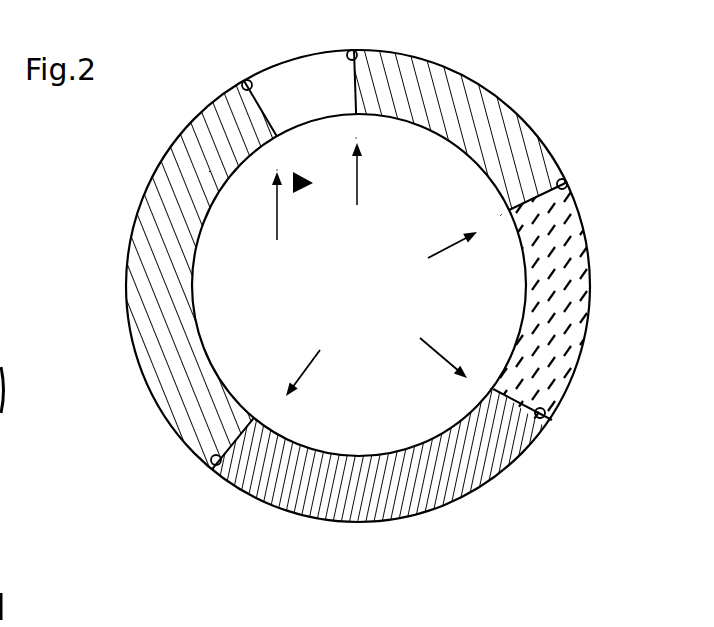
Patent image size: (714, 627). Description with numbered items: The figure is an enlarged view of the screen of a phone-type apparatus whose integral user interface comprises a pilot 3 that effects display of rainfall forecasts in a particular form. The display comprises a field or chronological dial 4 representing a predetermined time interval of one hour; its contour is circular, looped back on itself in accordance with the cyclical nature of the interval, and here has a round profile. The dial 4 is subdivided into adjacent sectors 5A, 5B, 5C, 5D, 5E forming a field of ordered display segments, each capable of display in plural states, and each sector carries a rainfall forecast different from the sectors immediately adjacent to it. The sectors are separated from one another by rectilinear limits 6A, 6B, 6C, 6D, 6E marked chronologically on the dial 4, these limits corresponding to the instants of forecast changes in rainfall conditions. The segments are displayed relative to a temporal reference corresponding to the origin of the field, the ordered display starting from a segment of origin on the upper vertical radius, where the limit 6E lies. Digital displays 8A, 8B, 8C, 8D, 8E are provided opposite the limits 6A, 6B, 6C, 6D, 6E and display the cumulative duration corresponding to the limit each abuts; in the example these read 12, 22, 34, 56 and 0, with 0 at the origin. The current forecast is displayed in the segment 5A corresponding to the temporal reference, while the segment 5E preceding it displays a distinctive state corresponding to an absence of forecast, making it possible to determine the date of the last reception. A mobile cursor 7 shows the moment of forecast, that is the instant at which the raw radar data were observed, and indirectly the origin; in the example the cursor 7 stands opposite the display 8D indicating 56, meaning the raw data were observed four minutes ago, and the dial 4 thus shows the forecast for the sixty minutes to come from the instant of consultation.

The pilot 3 is at (102, 281).
The chronological dial 4 is at (138, 186).
The sector 5A is at (468, 92).
The sector 5B is at (527, 320).
The sector 5C is at (409, 510).
The sector 5D is at (184, 323).
The sector 5E is at (283, 80).
The limit 6A is at (567, 180).
The limit 6B is at (551, 424).
The limit 6C is at (207, 467).
The limit 6D is at (241, 78).
The limit 6E is at (352, 50).
The mobile cursor 7 is at (314, 181).
The digital display 8A is at (433, 255).
The digital display 8B is at (428, 346).
The digital display 8C is at (315, 360).
The digital display 8D is at (279, 219).
The digital display 8E is at (355, 189).
The position index 0 is at (355, 127).
The position index 12 is at (495, 229).
The position index 22 is at (482, 379).
The position index 34 is at (271, 409).
The position index 56 is at (286, 159).